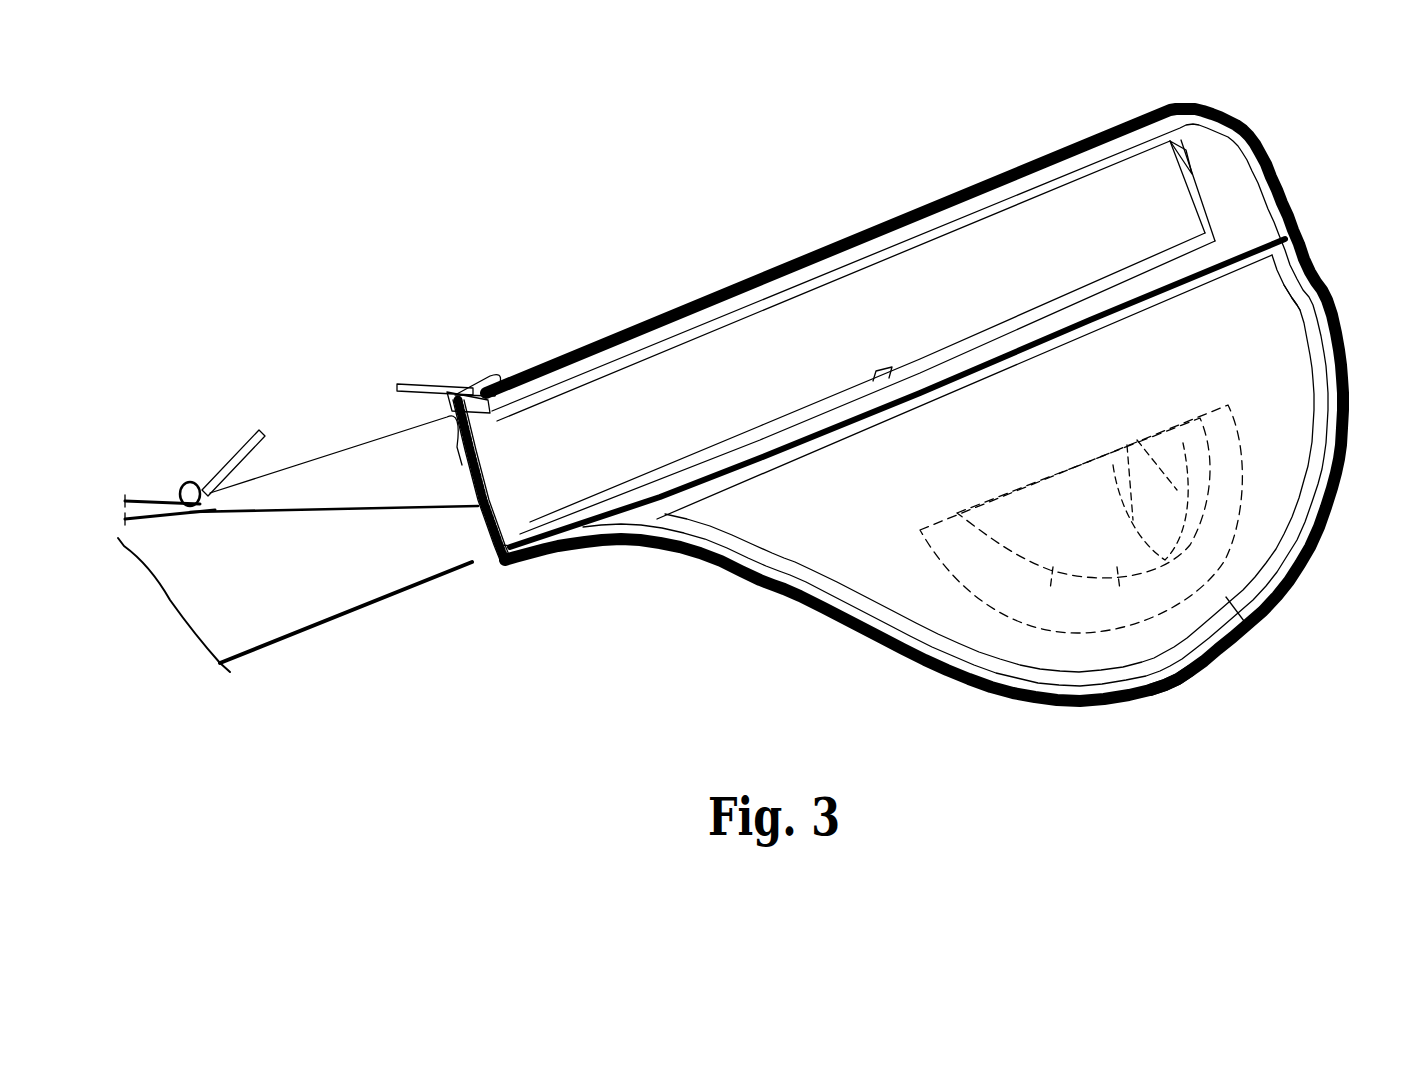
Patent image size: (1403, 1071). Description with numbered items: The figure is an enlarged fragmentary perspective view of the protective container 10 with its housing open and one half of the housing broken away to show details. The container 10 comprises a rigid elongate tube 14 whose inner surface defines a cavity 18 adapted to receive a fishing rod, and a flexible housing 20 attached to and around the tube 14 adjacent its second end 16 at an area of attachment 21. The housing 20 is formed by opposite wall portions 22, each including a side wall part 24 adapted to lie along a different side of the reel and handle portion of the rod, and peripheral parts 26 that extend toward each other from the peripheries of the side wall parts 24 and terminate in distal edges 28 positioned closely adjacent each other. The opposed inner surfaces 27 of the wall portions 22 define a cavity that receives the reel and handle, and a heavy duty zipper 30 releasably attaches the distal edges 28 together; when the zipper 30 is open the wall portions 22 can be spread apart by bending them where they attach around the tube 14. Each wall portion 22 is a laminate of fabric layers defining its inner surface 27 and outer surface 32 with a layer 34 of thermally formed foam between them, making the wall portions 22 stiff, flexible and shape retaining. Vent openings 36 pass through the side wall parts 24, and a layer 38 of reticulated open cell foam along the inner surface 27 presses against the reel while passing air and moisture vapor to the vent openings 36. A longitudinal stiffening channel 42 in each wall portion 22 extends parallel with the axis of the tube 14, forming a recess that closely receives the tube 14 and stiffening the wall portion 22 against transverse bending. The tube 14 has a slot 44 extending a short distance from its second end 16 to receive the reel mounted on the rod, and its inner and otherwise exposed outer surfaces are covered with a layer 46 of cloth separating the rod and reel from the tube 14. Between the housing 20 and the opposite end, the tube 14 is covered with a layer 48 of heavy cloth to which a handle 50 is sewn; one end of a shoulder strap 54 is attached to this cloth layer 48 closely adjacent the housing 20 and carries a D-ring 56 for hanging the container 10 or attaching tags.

The container 10 is at (1057, 128).
The rigid elongate tube 14 is at (580, 405).
The second end 16 is at (1207, 192).
The cavity 18 is at (1186, 170).
The flexible housing 20 is at (1138, 704).
The area of attachment 21 is at (455, 460).
The opposite wall portions 22 is at (1240, 608).
The side wall parts 24 is at (1290, 234).
The peripheral parts 26 is at (1180, 678).
The inner surfaces 27 is at (1311, 325).
The distal edges 28 is at (1324, 490).
The heavy duty zipper 30 is at (466, 377).
The outer surfaces 32 is at (487, 545).
The layer of thermally formed foam 34 is at (477, 478).
The vent openings 36 is at (1128, 445).
The layer of reticulated open cell foam 38 is at (1189, 637).
The longitudinal stiffening channel 42 is at (547, 521).
The slot 44 is at (890, 371).
The layer of cloth 46 is at (766, 379).
The layer of heavy cloth 48 is at (253, 596).
The handle 50 is at (150, 535).
The shoulder strap 54 is at (140, 498).
The D-ring 56 is at (258, 430).